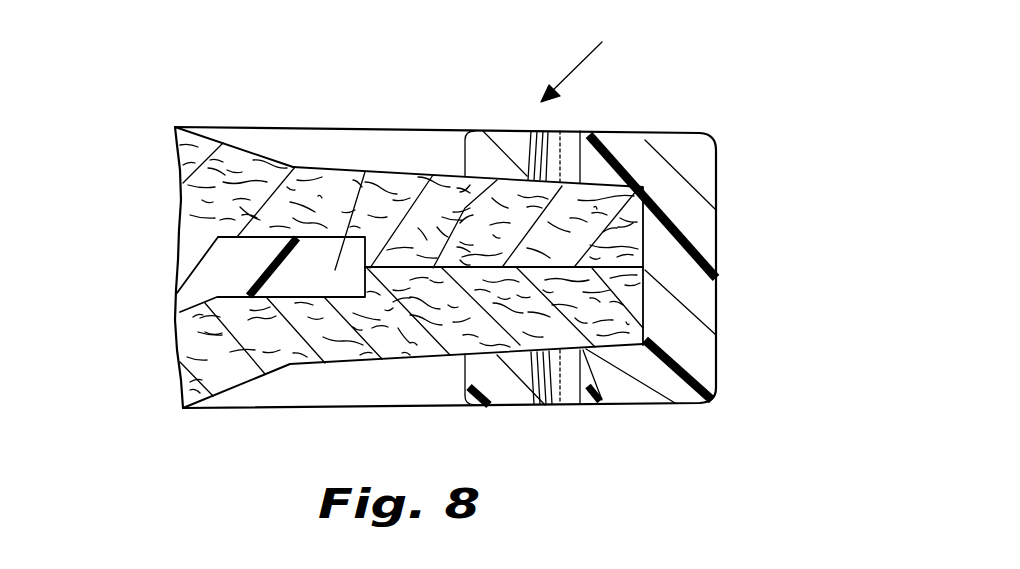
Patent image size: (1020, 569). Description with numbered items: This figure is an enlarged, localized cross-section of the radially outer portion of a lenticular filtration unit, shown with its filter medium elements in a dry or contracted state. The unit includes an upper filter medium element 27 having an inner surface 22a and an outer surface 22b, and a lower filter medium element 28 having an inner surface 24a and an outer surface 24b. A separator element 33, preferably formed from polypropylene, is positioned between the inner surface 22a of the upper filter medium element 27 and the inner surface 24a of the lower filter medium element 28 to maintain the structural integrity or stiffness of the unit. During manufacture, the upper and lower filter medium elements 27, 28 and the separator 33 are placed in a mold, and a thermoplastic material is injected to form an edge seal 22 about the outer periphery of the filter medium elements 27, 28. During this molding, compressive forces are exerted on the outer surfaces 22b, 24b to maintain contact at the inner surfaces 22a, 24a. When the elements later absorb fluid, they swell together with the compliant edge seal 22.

The edge seal 22 is at (712, 162).
The inner surface 22a is at (218, 237).
The outer surface 22b is at (175, 127).
The inner surface 24a is at (217, 297).
The outer surface 24b is at (183, 410).
The upper filter medium element 27 is at (295, 168).
The lower filter medium element 28 is at (335, 352).
The separator element 33 is at (223, 268).